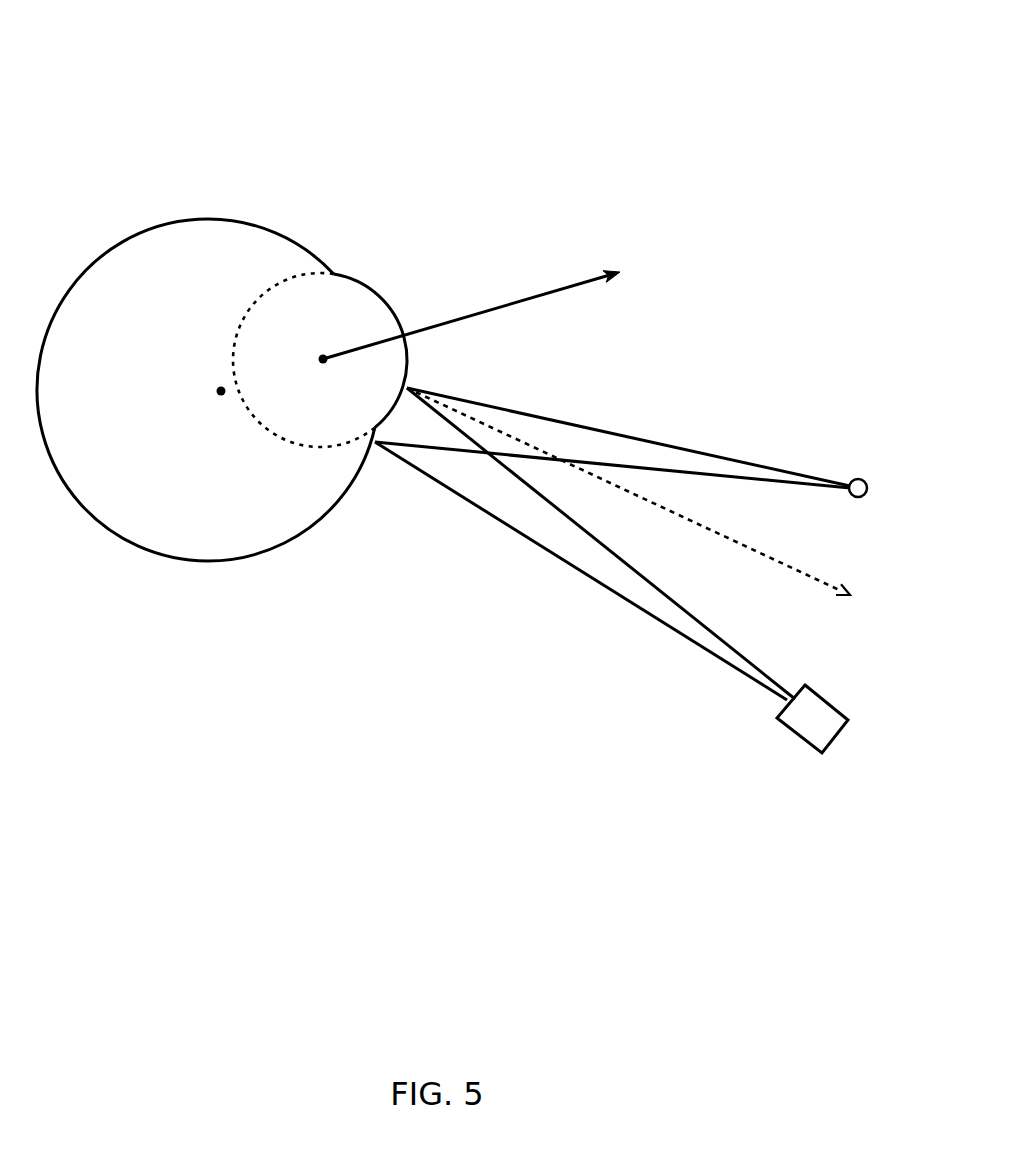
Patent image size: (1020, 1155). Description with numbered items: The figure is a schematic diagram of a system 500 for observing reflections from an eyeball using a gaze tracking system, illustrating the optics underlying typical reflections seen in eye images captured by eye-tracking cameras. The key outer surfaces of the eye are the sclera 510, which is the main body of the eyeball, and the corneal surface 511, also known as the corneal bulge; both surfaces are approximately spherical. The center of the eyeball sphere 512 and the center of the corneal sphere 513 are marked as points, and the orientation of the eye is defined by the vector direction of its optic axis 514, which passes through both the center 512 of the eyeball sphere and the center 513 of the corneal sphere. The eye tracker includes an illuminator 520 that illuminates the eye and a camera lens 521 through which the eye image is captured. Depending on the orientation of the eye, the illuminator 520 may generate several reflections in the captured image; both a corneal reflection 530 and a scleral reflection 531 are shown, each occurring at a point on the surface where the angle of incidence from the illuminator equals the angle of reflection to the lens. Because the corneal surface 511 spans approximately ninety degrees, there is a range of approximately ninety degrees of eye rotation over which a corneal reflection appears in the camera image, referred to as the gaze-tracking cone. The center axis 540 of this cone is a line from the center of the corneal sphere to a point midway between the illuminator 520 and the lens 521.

The system for observing reflections from an eyeball 500 is at (445, 932).
The sclera 510 is at (272, 227).
The corneal surface 511 is at (360, 282).
The center of the eyeball sphere 512 is at (221, 391).
The center of the corneal sphere 513 is at (323, 359).
The optic axis 514 is at (580, 278).
The illuminator 520 is at (868, 482).
The camera lens 521 is at (813, 752).
The corneal reflection 530 is at (558, 512).
The scleral reflection 531 is at (417, 473).
The center axis of the gaze-tracking cone 540 is at (797, 572).